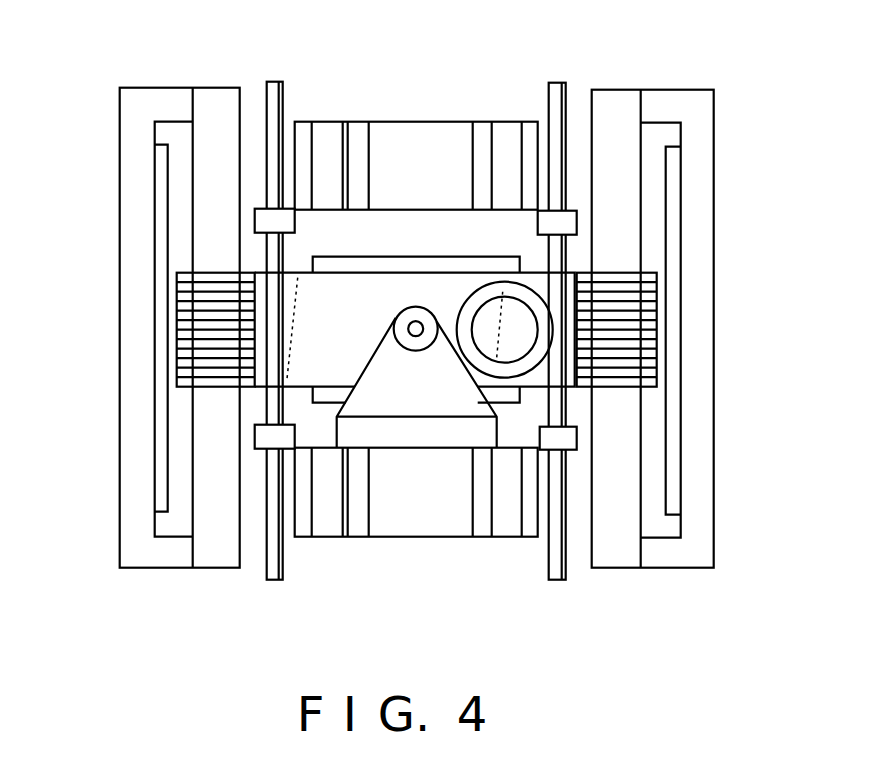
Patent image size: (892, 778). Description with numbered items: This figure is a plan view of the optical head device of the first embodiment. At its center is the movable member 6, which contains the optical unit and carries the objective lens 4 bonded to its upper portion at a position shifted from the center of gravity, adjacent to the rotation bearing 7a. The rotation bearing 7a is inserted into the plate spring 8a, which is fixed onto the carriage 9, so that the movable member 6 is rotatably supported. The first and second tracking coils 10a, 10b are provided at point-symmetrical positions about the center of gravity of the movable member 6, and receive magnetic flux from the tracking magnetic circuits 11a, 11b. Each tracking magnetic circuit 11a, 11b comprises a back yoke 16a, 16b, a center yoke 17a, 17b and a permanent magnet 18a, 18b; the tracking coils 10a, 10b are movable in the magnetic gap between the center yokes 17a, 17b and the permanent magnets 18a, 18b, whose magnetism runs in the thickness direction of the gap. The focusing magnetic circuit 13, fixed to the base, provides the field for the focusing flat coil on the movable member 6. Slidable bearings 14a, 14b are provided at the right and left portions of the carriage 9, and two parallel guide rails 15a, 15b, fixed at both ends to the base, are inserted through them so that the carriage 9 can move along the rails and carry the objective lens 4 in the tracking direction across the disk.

The objective lens 4 is at (520, 337).
The movable member 6 is at (298, 272).
The rotation bearing 7a is at (416, 337).
The plate spring 8a is at (436, 402).
The carriage 9 is at (502, 217).
The first tracking coil 10a is at (627, 308).
The second tracking coil 10b is at (207, 330).
The tracking magnetic circuit 11a is at (682, 323).
The tracking magnetic circuit 11b is at (151, 323).
The focusing magnetic circuit 13 is at (416, 294).
The slidable bearing 14a is at (567, 221).
The slidable bearing 14b is at (262, 222).
The guide rail 15a is at (562, 81).
The guide rail 15b is at (278, 80).
The back yoke 16a is at (703, 520).
The back yoke 16b is at (132, 497).
The center yoke 17a is at (628, 557).
The center yoke 17b is at (203, 557).
The permanent magnet 18a is at (673, 448).
The permanent magnet 18b is at (157, 447).